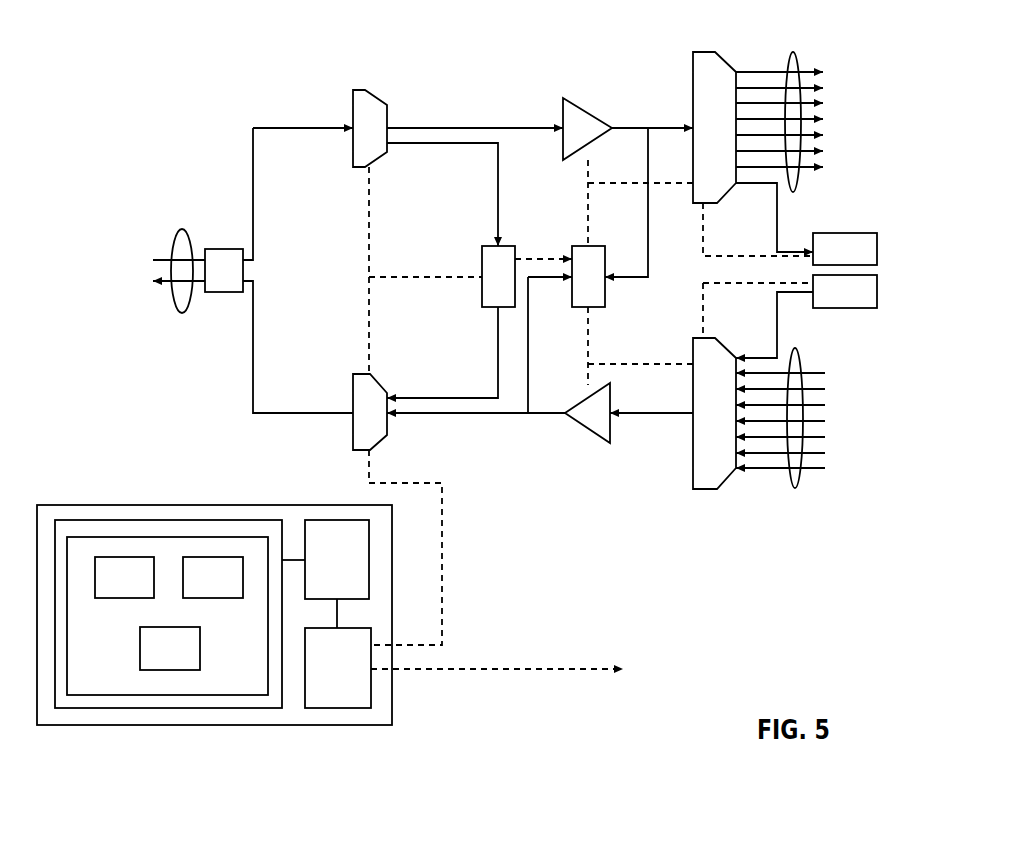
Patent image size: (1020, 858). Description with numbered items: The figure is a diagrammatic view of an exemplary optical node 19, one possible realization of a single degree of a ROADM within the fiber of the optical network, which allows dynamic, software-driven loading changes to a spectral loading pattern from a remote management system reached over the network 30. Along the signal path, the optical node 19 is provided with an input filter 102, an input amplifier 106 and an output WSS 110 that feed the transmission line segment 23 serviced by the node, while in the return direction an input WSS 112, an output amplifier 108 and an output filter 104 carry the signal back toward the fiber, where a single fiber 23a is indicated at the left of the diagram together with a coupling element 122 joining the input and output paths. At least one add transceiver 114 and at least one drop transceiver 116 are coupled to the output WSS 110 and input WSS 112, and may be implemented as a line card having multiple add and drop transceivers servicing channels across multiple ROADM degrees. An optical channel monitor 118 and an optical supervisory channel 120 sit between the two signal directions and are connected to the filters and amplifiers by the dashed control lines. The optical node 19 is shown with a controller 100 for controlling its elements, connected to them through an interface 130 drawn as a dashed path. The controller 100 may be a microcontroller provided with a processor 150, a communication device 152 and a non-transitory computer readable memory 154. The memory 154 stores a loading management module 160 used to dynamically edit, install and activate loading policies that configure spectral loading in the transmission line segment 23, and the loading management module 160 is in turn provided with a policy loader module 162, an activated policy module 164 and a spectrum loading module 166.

The optical node 19 is at (218, 56).
The transmission line segment 23 is at (798, 58).
The optical fiber 23a is at (180, 313).
The network 30 is at (472, 669).
The controller 100 is at (393, 700).
The input filter 102 is at (362, 88).
The output filter 104 is at (353, 430).
The input amplifier 106 is at (593, 108).
The output amplifier 108 is at (580, 428).
The output WSS 110 is at (703, 51).
The input WSS 112 is at (703, 489).
The add transceiver 114 is at (836, 233).
The drop transceiver 116 is at (840, 308).
The optical channel monitor 118 is at (605, 300).
The optical supervisory channel 120 is at (482, 290).
The optical coupler 122 is at (222, 249).
The interface 130 is at (443, 525).
The processor 150 is at (337, 574).
The communication device 152 is at (338, 668).
The memory 154 is at (125, 520).
The loading management module 160 is at (187, 537).
The policy loader module 162 is at (124, 577).
The activated policy module 164 is at (213, 577).
The spectrum loading module 166 is at (170, 648).